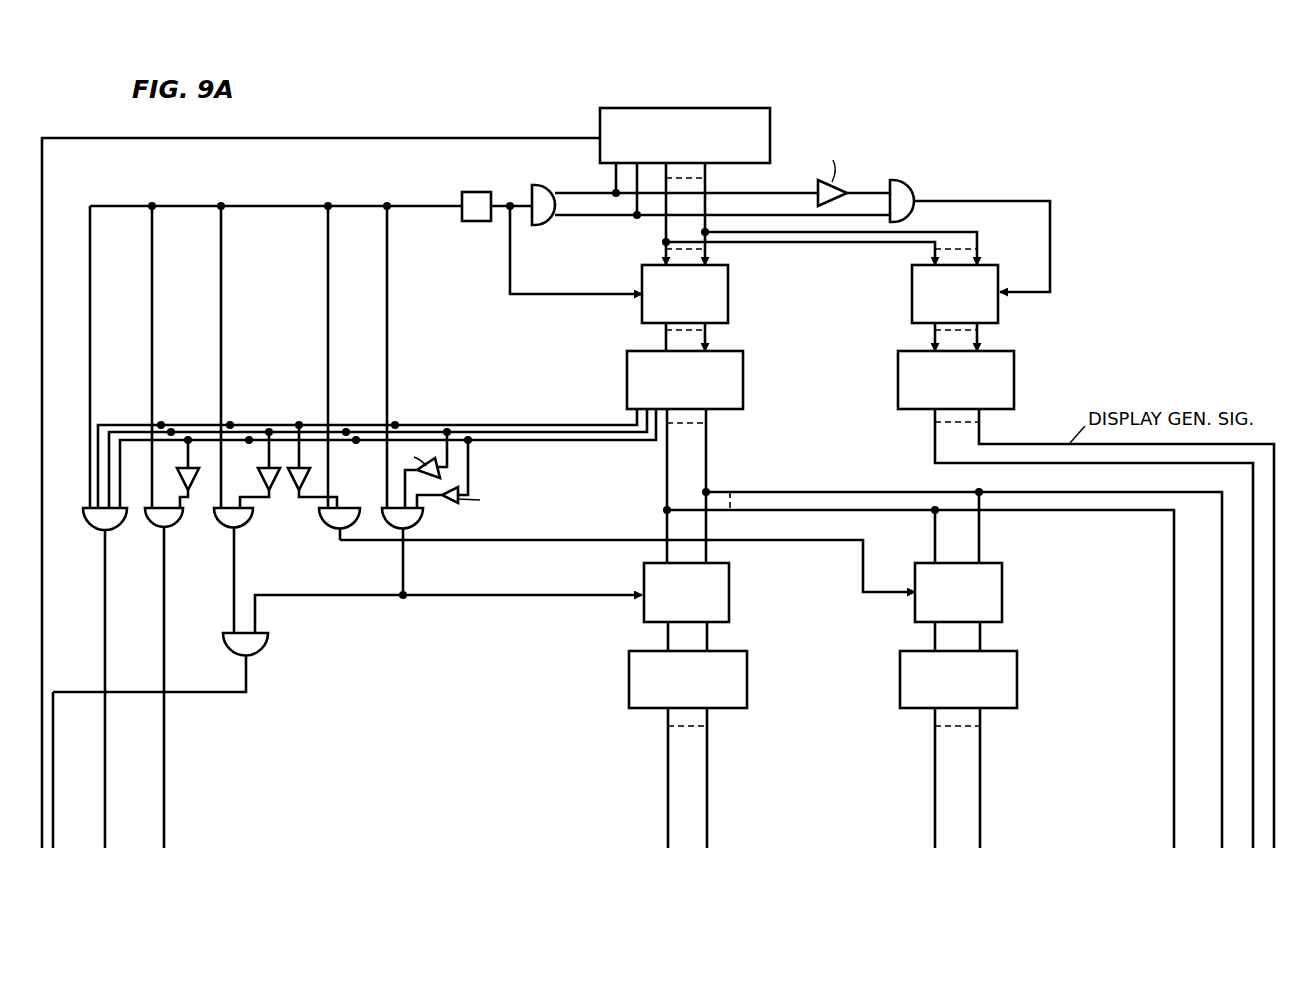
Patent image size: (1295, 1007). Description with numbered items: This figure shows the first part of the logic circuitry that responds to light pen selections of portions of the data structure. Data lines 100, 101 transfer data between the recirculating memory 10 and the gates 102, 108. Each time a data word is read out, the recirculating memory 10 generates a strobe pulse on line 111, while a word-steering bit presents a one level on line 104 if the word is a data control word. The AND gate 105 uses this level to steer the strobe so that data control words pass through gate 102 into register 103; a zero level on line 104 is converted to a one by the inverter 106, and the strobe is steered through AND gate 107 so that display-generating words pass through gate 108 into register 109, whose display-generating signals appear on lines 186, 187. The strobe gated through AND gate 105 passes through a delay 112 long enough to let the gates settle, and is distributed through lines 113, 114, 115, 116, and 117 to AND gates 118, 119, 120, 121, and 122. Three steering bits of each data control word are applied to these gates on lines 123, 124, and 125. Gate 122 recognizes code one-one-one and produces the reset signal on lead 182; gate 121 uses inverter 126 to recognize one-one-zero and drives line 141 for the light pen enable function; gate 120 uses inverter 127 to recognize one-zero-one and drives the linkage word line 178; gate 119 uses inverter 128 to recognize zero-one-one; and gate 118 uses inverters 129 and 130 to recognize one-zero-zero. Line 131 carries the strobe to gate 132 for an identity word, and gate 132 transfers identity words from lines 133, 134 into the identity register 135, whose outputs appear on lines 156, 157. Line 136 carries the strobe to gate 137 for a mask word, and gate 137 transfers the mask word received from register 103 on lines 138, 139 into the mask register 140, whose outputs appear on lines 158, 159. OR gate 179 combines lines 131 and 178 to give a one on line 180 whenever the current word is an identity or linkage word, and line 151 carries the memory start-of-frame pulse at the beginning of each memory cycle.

The recirculating memory 10 is at (772, 126).
The data line 100 is at (663, 230).
The data line 101 is at (707, 185).
The gate 102 is at (730, 288).
The register 103 is at (745, 373).
The line 104 is at (616, 176).
The AND gate 105 is at (546, 185).
The inverter 106 is at (838, 184).
The AND gate 107 is at (915, 183).
The gate 108 is at (912, 297).
The register 109 is at (898, 366).
The line 111 is at (633, 187).
The delay 112 is at (482, 191).
The line 113 is at (388, 318).
The line 114 is at (329, 316).
The line 115 is at (222, 316).
The line 116 is at (153, 316).
The line 117 is at (91, 319).
The AND gate 118 is at (420, 521).
The AND gate 119 is at (334, 531).
The AND gate 120 is at (240, 530).
The AND gate 121 is at (172, 530).
The AND gate 122 is at (112, 531).
The line 123 is at (529, 421).
The line 124 is at (586, 429).
The line 125 is at (612, 441).
The inverter 126 is at (183, 465).
The inverter 127 is at (258, 465).
The inverter 128 is at (305, 465).
The inverter 129 is at (432, 460).
The inverter 130 is at (452, 506).
The line 131 is at (405, 584).
The gate 132 is at (730, 581).
The line 133 is at (667, 471).
The line 134 is at (706, 471).
The identity register 135 is at (748, 671).
The line 136 is at (368, 541).
The gate 137 is at (1003, 584).
The line 138 is at (790, 512).
The line 139 is at (790, 491).
The mask register 140 is at (1018, 671).
The line 141 is at (166, 771).
The line 151 is at (338, 137).
The line 156 is at (668, 759).
The line 157 is at (709, 766).
The line 158 is at (935, 756).
The line 159 is at (982, 769).
The line 178 is at (234, 584).
The OR gate 179 is at (268, 646).
The line 180 is at (55, 776).
The lead 182 is at (107, 773).
The line 186 is at (935, 438).
The line 187 is at (982, 438).